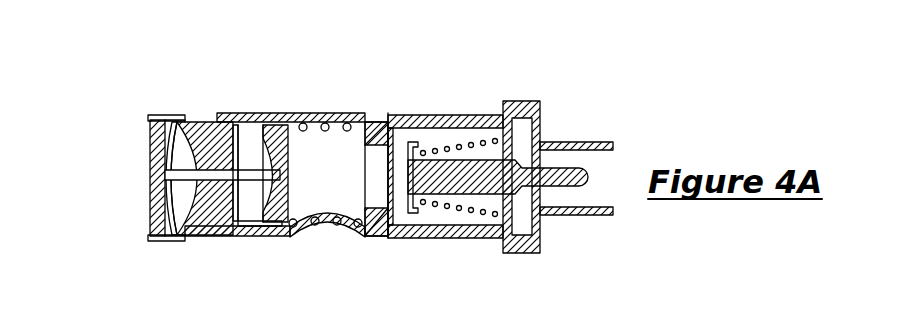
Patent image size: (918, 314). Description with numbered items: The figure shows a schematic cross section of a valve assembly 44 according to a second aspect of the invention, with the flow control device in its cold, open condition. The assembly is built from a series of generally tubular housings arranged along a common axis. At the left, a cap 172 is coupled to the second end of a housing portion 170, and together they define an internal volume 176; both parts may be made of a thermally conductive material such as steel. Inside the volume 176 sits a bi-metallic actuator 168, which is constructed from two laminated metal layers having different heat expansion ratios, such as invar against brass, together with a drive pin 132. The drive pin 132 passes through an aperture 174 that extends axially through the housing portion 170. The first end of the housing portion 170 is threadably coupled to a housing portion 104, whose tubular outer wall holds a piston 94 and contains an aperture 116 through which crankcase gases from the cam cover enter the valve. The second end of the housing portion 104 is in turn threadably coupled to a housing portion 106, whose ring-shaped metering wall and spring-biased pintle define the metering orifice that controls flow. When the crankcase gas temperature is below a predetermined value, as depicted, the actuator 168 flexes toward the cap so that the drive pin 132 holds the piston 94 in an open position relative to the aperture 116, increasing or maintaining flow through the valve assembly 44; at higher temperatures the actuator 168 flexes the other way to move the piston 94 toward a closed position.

The valve assembly 44 is at (334, 100).
The piston 94 is at (267, 224).
The housing portion 104 is at (251, 110).
The housing portion 106 is at (442, 112).
The aperture 116 is at (338, 238).
The drive pin 132 is at (247, 178).
The bi-metallic actuator 168 is at (167, 175).
The housing portion 170 is at (197, 246).
The cap 172 is at (153, 221).
The aperture 174 is at (213, 171).
The internal volume 176 is at (181, 156).